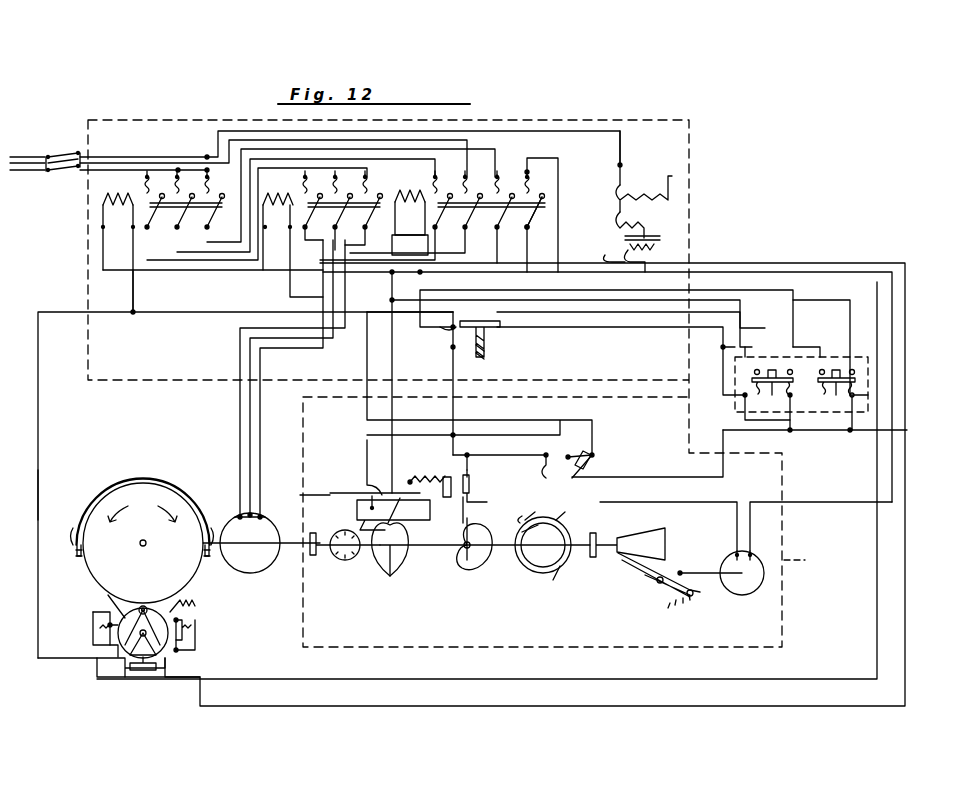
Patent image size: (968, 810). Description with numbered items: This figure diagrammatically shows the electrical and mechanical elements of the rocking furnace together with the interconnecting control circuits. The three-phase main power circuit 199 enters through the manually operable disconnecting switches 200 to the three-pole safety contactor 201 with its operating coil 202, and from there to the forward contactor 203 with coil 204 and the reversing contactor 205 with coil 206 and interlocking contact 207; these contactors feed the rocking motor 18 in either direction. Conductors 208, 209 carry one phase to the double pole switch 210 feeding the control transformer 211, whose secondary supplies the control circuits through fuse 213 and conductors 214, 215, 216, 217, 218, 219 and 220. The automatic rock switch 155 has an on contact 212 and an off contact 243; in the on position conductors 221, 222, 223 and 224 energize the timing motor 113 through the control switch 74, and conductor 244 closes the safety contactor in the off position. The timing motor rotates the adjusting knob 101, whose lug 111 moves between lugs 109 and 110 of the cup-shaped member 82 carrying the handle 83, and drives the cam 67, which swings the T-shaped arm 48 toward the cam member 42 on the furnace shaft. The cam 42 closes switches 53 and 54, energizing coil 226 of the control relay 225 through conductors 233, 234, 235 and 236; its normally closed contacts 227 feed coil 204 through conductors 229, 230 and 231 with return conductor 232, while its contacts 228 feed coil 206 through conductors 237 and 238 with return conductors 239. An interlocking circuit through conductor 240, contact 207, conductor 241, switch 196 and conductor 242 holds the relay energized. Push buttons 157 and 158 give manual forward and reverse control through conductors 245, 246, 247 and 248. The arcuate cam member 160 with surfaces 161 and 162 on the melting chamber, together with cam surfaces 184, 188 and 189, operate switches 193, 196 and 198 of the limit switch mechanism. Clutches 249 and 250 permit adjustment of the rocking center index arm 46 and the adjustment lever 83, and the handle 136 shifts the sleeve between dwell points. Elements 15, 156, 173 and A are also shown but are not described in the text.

The main power circuit 199 is at (22, 155).
The main disconnecting switches 200 is at (62, 152).
The main or safety contactor 201 is at (190, 215).
The operating coil 202 is at (117, 243).
The forward contactor 203 is at (342, 210).
The operating coil 204 is at (292, 235).
The reversing contactor 205 is at (432, 221).
The operating coil 206 is at (414, 182).
The interlocking contact 207 is at (538, 212).
The conductor 208 is at (543, 140).
The conductor 209 is at (610, 135).
The double pole single throw switch 210 is at (660, 175).
The control transformer 211 is at (638, 212).
The contact 212 is at (546, 470).
The fuse 213 is at (651, 250).
The conductor 214 is at (797, 265).
The conductor 215 is at (172, 680).
The conductor 216 is at (42, 490).
The conductor 217 is at (136, 287).
The conductor 218 is at (219, 275).
The conductor 219 is at (621, 243).
The conductor 220 is at (805, 436).
The conductor 221 is at (508, 446).
The conductor 222 is at (462, 466).
The conductor 223 is at (600, 497).
The conductor 224 is at (793, 500).
The control relay 225 is at (490, 340).
The operating coil 226 is at (490, 358).
The normally closed contacts 227 is at (445, 335).
The contacts 228 is at (476, 318).
The conductor 229 is at (612, 335).
The conductor 230 is at (797, 345).
The conductor 231 is at (816, 293).
The conductor 232 is at (270, 272).
The conductor 233 is at (490, 421).
The conductor 234 is at (305, 493).
The conductor 235 is at (394, 413).
The conductor 236 is at (410, 310).
The conductor 237 is at (528, 320).
The conductor 238 is at (498, 290).
The conductors 239 is at (410, 245).
The conductor 240 is at (560, 196).
The conductor 241 is at (482, 679).
The conductor 242 is at (128, 670).
The contact 243 is at (590, 470).
The conductor 244 is at (205, 310).
The conductor 245 is at (770, 415).
The conductor 246 is at (720, 385).
The conductor 247 is at (870, 410).
The conductor 248 is at (735, 410).
The clutch 249 is at (314, 556).
The clutch 250 is at (594, 560).
The drum 15 is at (98, 575).
The rocking motor 18 is at (240, 525).
The cam member 42 is at (382, 565).
The knob 46 is at (344, 560).
The T-shaped arm 48 is at (426, 474).
The switch 53 is at (357, 517).
The switch 54 is at (425, 537).
The cam 67 is at (463, 562).
The control switch 74 is at (470, 480).
The cup-shaped member 82 is at (536, 568).
The actuating handle 83 is at (568, 522).
The adjusting knob 101 is at (522, 558).
The abutment lug 109 is at (515, 520).
The abutment lug 110 is at (562, 583).
The lug 111 is at (517, 536).
The timing motor 113 is at (745, 580).
The digitally operable handle 136 is at (660, 595).
The automatic rock switch 155 is at (575, 455).
The relay unit 156 is at (872, 355).
The push button control switch 157 is at (770, 368).
The push button control switch 158 is at (834, 368).
The arcuate cam member 160 is at (150, 470).
The cam surface 161 is at (74, 556).
The cam surface 162 is at (72, 535).
The governor 173 is at (146, 608).
The cam surface 184 is at (190, 650).
The cam surface 188 is at (100, 647).
The cam surface 189 is at (102, 604).
The switch 193 is at (146, 672).
The switch 196 is at (104, 623).
The switch 198 is at (190, 612).
The unit A is at (801, 565).